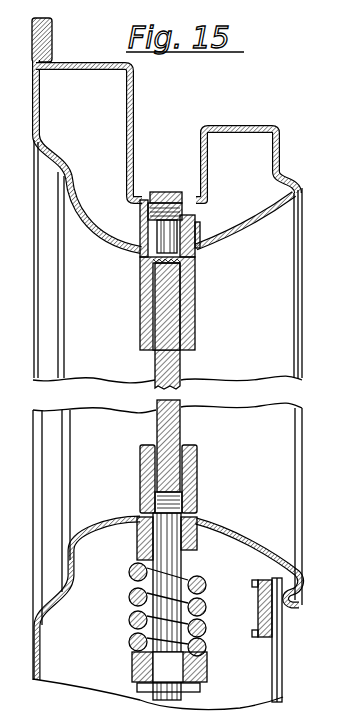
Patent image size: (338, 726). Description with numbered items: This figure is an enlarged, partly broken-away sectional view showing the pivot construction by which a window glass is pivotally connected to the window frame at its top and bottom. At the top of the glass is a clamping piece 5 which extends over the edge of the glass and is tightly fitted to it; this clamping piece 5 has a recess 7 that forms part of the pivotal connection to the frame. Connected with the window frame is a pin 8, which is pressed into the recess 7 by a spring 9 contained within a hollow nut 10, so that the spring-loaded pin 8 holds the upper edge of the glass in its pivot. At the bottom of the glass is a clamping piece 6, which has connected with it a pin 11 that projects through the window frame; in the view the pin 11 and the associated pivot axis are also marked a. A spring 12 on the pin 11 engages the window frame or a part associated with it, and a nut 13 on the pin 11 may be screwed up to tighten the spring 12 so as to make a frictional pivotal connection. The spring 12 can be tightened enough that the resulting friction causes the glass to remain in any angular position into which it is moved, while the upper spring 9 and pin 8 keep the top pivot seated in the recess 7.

The hollow nut 10 is at (154, 192).
The spring 9 is at (200, 209).
The pin 8 is at (151, 240).
The recess 7 is at (200, 262).
The clamping piece 5 is at (196, 306).
The shaft a is at (181, 367).
The clamping piece 6 is at (198, 471).
The pin 11 is at (146, 609).
The spring 12 is at (207, 608).
The nut 13 is at (208, 669).